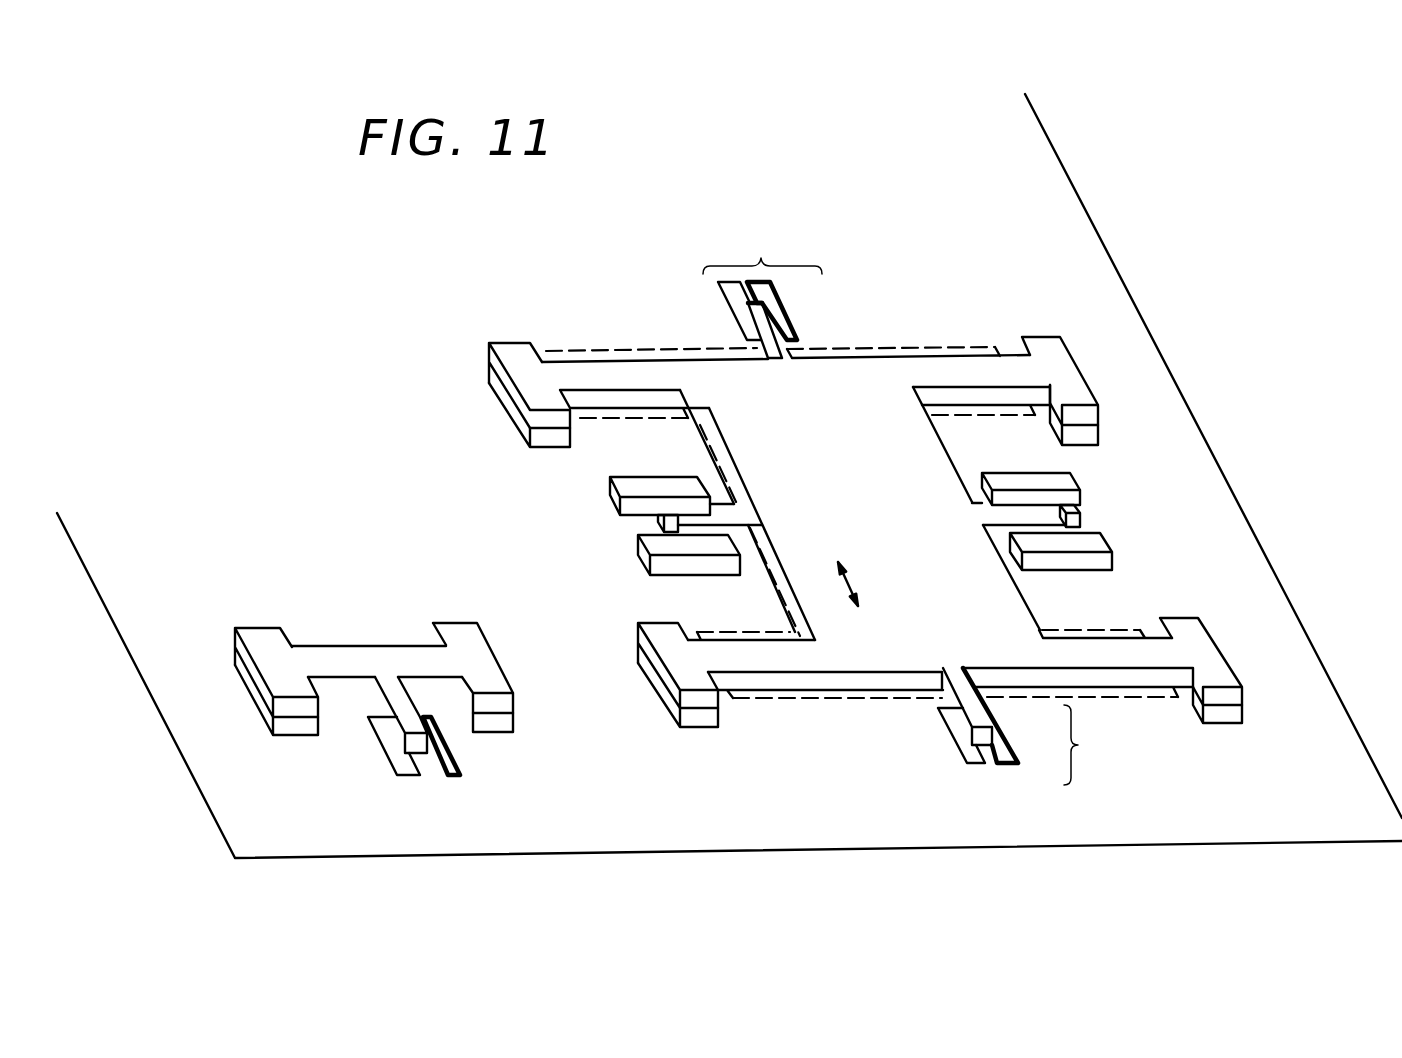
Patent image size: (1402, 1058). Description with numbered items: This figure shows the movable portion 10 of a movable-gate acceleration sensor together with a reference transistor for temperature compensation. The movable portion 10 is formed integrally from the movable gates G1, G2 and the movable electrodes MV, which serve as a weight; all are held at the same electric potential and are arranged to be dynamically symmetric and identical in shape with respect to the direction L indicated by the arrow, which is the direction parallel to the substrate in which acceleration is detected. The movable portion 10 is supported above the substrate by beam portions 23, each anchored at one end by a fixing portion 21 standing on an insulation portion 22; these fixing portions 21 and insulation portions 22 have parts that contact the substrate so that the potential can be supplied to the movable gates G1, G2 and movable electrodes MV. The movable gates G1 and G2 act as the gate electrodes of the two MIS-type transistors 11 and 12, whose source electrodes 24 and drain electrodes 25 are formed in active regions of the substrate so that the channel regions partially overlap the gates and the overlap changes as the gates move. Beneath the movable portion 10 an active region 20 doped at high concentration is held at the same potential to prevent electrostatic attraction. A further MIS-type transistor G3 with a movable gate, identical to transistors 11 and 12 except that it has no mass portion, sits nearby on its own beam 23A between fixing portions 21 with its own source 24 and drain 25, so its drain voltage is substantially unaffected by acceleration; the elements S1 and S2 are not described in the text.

The movable portion 10 is at (853, 378).
The MISFET 11 is at (762, 252).
The MISFET 12 is at (1092, 745).
The active region 20 is at (812, 690).
The fixing portion 21 is at (517, 347).
The insulation portion 22 is at (548, 438).
The beam portion 23 is at (600, 372).
The conductor strip 23A is at (360, 650).
The source electrode 24 is at (727, 292).
The drain electrode 25 is at (762, 294).
The movable gate G1 is at (774, 325).
The movable gate G2 is at (988, 718).
The MIS-type transistor with movable gate G3 is at (403, 713).
The switching element S1 is at (615, 493).
The switching element S2 is at (645, 550).
The movable electrode MV is at (660, 521).
The direction L is at (862, 585).